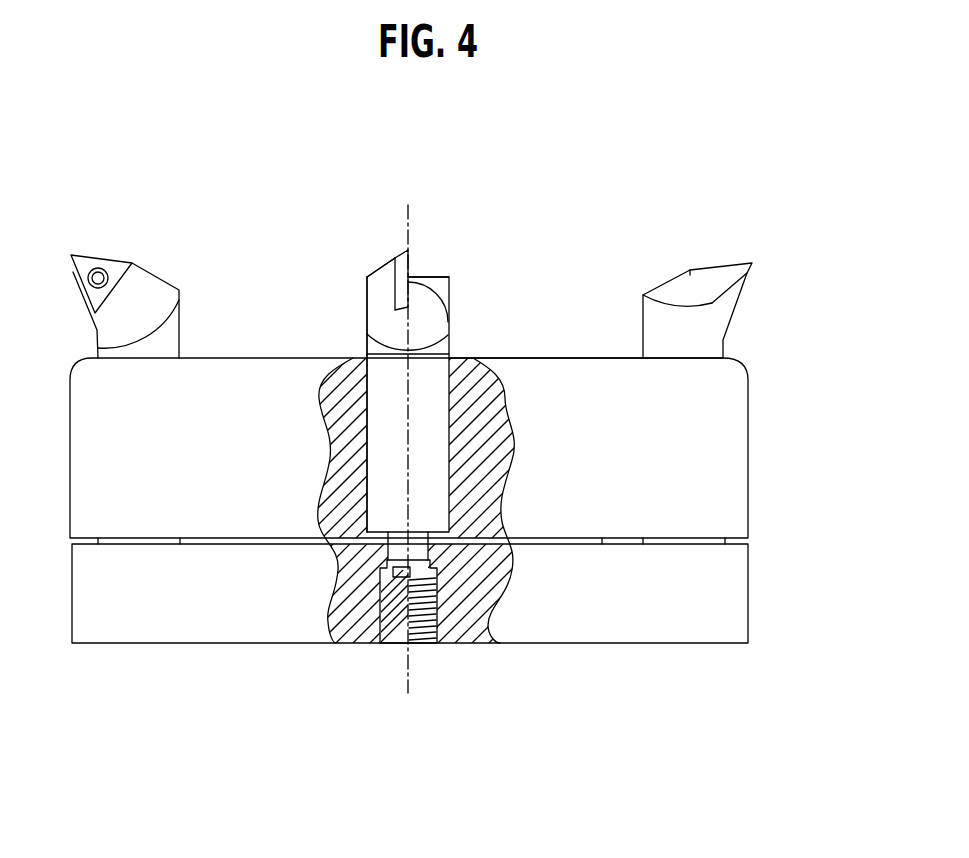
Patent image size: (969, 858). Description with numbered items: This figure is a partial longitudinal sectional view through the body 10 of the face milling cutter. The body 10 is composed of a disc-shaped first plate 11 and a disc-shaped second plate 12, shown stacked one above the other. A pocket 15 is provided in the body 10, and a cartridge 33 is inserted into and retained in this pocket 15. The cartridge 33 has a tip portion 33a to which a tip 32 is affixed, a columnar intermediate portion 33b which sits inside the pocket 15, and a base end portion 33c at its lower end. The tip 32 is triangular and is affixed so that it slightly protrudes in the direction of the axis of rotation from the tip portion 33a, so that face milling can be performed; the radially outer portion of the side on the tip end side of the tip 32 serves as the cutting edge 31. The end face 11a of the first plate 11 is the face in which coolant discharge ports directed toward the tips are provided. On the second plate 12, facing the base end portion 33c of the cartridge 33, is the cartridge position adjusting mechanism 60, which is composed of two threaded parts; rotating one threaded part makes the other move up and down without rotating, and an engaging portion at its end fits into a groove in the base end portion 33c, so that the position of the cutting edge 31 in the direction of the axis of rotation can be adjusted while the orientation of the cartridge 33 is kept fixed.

The body 10 is at (475, 500).
The first plate 11 is at (747, 503).
The end face of the first plate 11a is at (562, 358).
The second plate 12 is at (451, 591).
The pocket 15 is at (438, 397).
The cutting edge 31 is at (409, 266).
The tip 32 is at (407, 266).
The cartridge 33 is at (349, 453).
The tip portion 33a is at (367, 277).
The intermediate portion 33b is at (367, 413).
The base end portion 33c is at (362, 563).
The cartridge position adjusting mechanism 60 is at (422, 643).